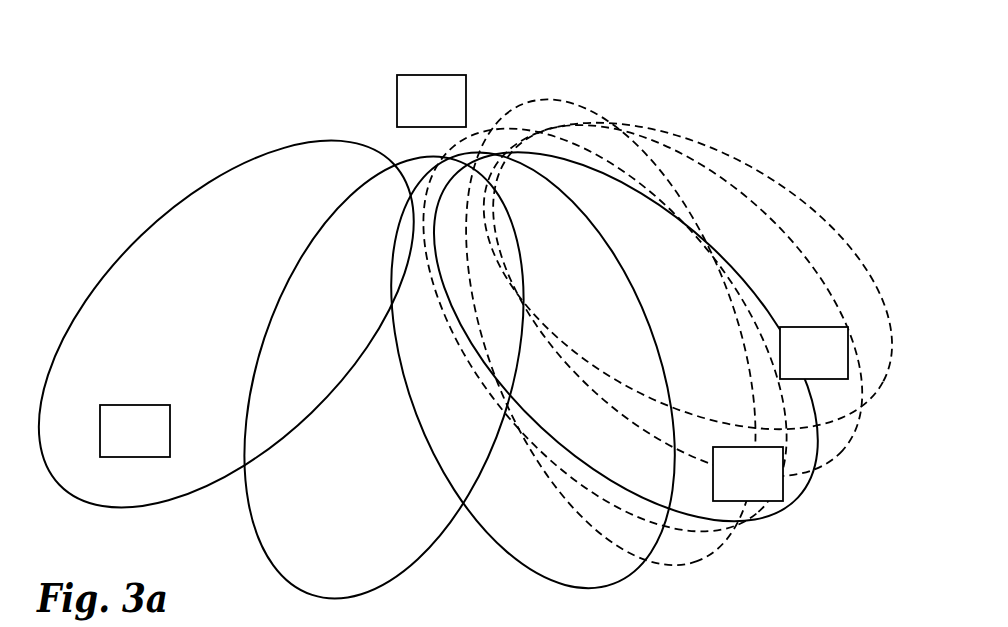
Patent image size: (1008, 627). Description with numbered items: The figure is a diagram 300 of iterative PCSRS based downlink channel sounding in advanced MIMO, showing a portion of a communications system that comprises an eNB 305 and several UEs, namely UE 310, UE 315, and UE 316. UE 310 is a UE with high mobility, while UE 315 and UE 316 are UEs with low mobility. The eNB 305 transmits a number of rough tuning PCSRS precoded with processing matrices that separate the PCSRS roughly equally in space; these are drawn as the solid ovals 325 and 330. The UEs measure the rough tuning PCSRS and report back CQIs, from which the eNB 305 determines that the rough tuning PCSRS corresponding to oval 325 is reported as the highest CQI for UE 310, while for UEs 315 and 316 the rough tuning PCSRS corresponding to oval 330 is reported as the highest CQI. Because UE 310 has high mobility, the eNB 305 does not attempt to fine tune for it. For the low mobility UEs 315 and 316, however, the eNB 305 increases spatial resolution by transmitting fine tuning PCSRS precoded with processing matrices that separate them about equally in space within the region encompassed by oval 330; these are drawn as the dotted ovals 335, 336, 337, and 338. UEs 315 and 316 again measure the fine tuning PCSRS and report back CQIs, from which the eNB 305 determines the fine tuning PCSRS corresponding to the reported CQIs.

The diagram 300 is at (765, 62).
The eNB 305 is at (432, 75).
The UE 310 is at (100, 432).
The UE 315 is at (735, 447).
The UE 316 is at (831, 327).
The solid oval 325 is at (223, 172).
The solid oval 330 is at (576, 163).
The dotted oval 335 is at (727, 155).
The dotted oval 336 is at (766, 213).
The dotted oval 337 is at (687, 232).
The dotted oval 338 is at (733, 306).